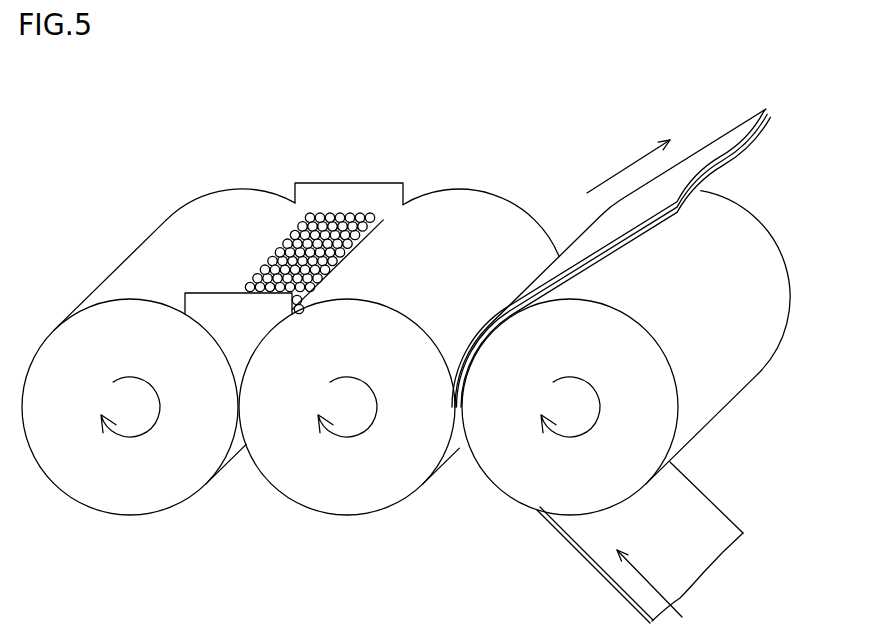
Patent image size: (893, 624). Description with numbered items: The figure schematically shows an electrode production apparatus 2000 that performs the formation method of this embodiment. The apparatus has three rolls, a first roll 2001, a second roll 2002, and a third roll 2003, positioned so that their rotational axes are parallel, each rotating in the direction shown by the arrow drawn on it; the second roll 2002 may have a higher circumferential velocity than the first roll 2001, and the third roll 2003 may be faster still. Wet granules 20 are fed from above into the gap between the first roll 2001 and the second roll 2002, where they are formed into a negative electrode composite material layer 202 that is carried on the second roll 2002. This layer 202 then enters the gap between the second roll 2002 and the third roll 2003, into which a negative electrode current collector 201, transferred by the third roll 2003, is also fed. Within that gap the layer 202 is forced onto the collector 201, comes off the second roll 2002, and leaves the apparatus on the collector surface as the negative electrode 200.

The electrode production apparatus 2000 is at (142, 122).
The first roll 2001 is at (240, 200).
The second roll 2002 is at (452, 201).
The third roll 2003 is at (758, 238).
The wet granules 20 is at (330, 226).
The negative electrode 200 is at (807, 73).
The negative electrode current collector 201 is at (772, 128).
The negative electrode composite material layer 202 is at (712, 152).